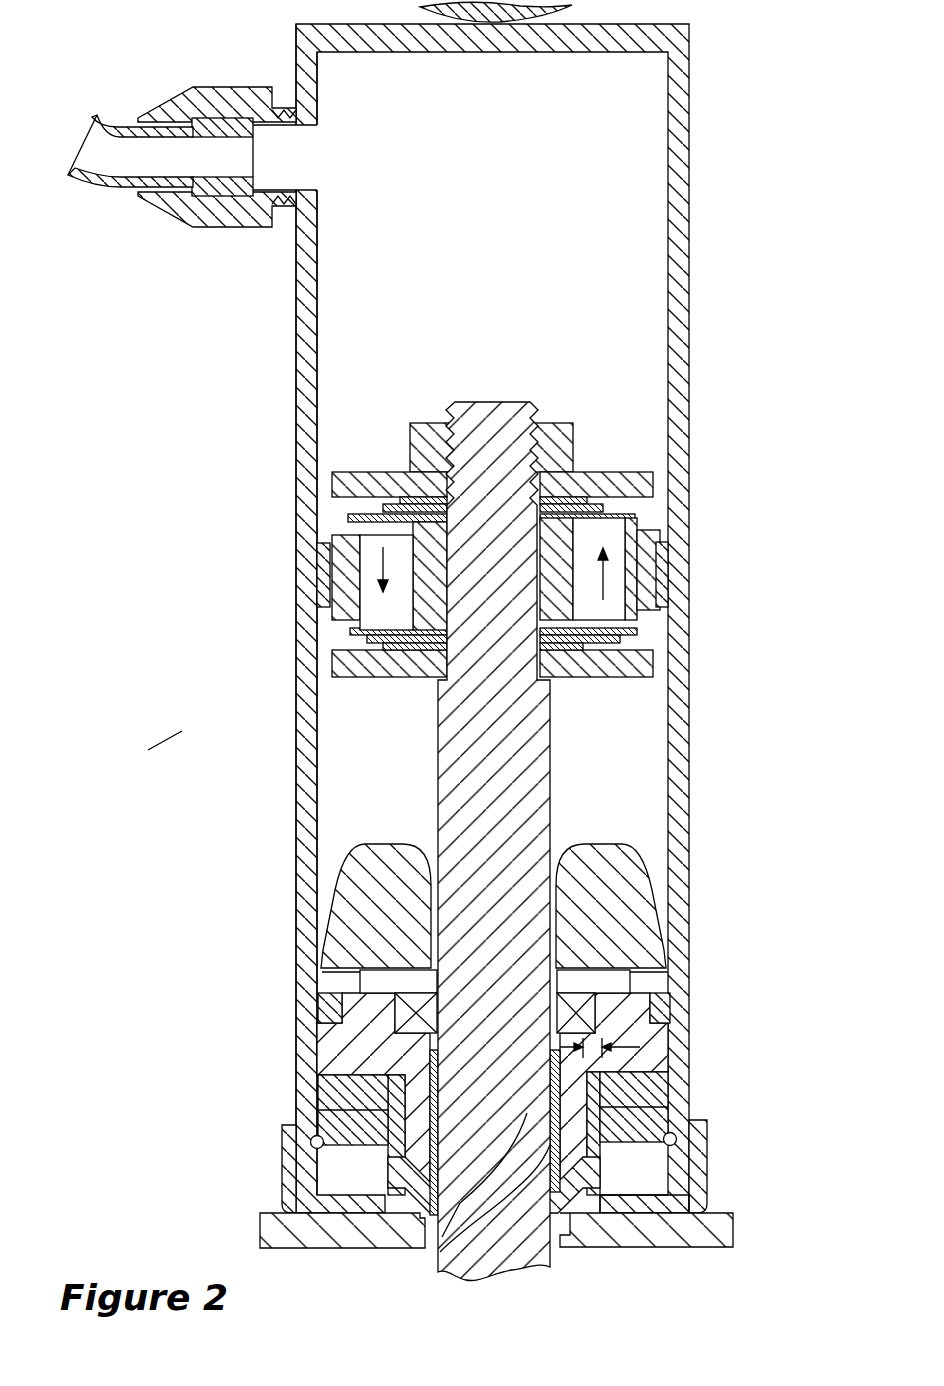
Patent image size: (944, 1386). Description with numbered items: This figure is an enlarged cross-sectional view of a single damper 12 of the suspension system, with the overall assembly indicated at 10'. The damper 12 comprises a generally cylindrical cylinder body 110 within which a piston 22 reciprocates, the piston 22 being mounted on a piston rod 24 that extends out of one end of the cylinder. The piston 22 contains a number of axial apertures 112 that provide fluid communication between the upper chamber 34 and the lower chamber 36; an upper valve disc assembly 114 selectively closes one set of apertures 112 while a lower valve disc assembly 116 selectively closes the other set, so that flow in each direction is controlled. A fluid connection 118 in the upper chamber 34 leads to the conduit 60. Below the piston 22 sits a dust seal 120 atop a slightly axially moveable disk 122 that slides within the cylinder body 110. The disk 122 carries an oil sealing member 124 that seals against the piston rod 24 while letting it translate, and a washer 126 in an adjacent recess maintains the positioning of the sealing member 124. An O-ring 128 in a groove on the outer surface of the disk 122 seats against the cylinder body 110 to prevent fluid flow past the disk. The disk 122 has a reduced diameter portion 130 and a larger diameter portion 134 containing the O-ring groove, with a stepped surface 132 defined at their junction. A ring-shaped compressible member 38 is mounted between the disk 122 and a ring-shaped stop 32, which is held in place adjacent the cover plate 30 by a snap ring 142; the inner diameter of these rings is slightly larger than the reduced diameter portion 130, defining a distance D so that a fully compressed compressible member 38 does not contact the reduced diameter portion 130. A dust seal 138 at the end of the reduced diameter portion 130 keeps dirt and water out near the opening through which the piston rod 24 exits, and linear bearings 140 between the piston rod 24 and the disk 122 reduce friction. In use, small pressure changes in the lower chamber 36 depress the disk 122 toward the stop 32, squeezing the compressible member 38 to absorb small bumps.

The actuator assembly 10' is at (147, 753).
The damper 12 is at (263, 407).
The piston 22 is at (595, 408).
The piston rod 24 is at (553, 760).
The cover plate 30 is at (278, 1160).
The stop 32 is at (360, 1140).
The upper chamber 34 is at (468, 222).
The lower chamber 36 is at (390, 772).
The compressible member 38 is at (327, 1098).
The conduit 60 is at (103, 187).
The cylinder body 110 is at (296, 341).
The axial apertures 112 is at (367, 560).
The upper valve disc assembly 114 is at (617, 510).
The lower valve disc assembly 116 is at (363, 630).
The fluid connection 118 is at (287, 177).
The dust seal 120 is at (632, 850).
The disk 122 is at (340, 1052).
The oil sealing member 124 is at (573, 1000).
The washer 126 is at (372, 983).
The O-ring 128 is at (663, 1007).
The reduced diameter portion 130 is at (582, 1143).
The stepped surface 132 is at (641, 1070).
The larger diameter portion 134 is at (667, 1041).
The dust seal 138 is at (583, 1215).
The linear bearings 140 is at (436, 1218).
The snap ring 142 is at (690, 1124).